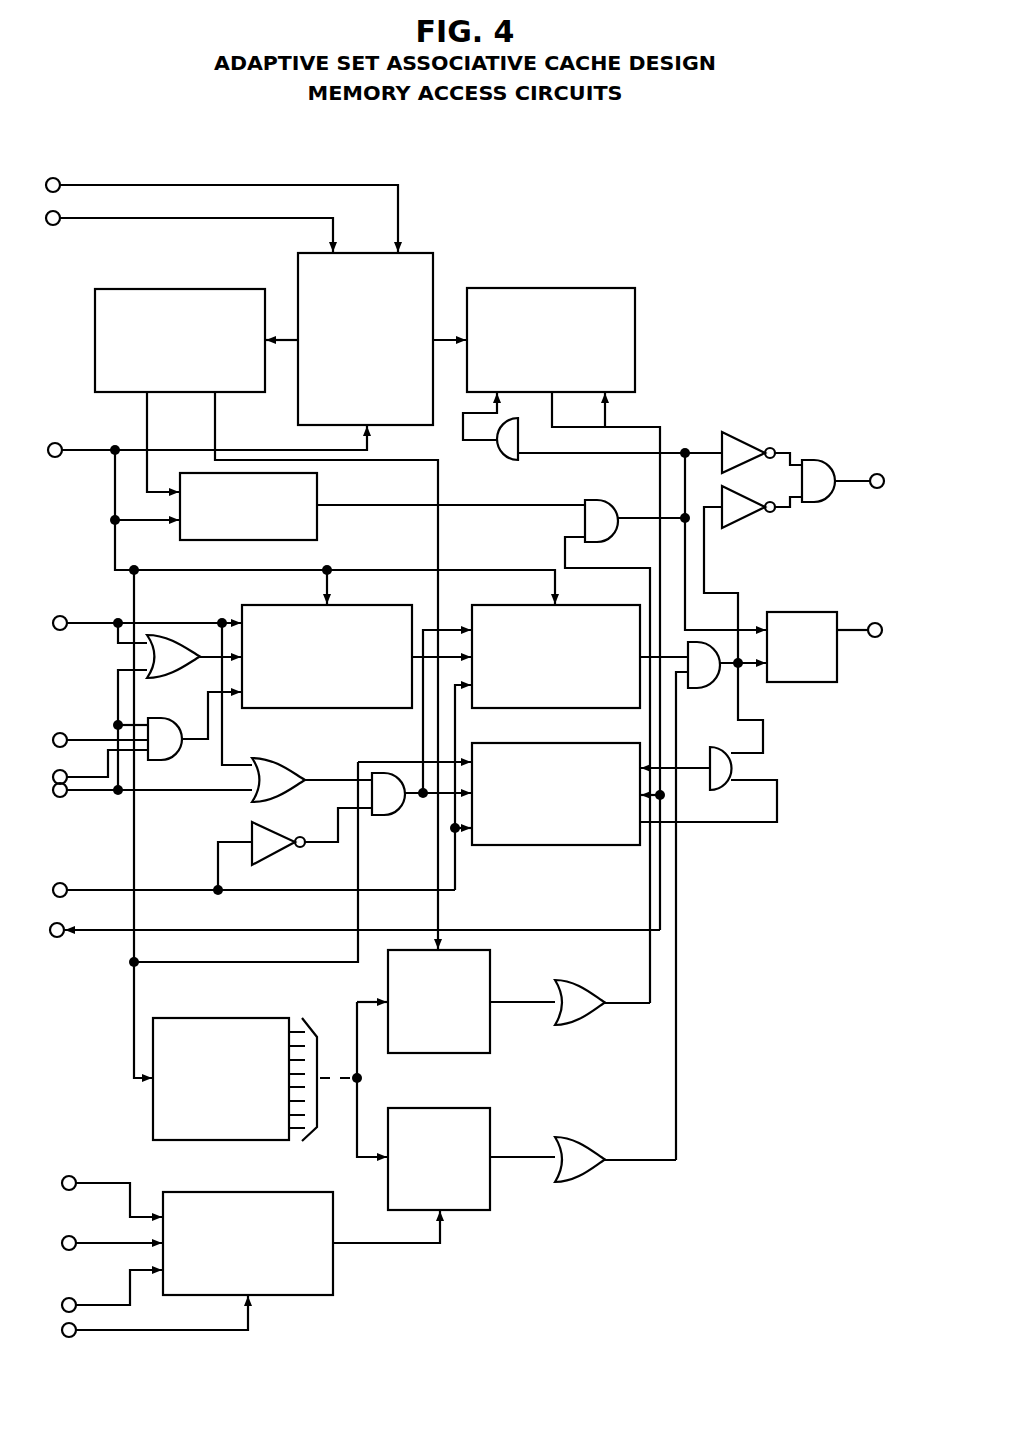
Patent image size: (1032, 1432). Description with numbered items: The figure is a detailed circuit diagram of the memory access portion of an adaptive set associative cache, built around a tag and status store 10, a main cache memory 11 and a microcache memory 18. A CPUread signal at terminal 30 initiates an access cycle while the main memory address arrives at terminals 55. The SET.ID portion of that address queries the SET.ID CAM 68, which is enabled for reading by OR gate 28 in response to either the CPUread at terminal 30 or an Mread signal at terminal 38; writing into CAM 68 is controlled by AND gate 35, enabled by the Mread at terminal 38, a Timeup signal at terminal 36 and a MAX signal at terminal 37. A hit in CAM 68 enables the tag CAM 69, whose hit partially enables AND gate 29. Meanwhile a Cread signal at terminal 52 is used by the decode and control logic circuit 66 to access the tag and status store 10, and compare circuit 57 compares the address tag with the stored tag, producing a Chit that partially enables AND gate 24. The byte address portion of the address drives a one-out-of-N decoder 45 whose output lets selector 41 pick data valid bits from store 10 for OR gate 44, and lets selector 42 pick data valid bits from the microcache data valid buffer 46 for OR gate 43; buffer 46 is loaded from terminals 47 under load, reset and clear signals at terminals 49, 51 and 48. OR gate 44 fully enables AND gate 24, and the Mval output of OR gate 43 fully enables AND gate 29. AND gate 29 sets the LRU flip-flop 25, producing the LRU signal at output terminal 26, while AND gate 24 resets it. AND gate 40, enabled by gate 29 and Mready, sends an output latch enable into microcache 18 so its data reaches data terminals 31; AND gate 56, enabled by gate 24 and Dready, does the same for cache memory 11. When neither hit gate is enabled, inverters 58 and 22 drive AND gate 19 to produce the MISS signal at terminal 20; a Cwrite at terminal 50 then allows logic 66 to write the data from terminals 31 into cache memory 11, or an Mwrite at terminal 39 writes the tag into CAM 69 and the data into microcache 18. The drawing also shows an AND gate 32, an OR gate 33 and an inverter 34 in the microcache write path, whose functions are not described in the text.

The tag and status store 10 is at (183, 288).
The cache memory 11 is at (555, 288).
The microcache memory 18 is at (605, 845).
The AND gate 19 is at (808, 460).
The terminal 20 is at (880, 475).
The inverter 22 is at (724, 528).
The AND gate 24 is at (586, 500).
The LRU flip-flop 25 is at (808, 612).
The output terminal 26 is at (878, 637).
The OR gate 28 is at (170, 678).
The AND gate 29 is at (696, 688).
The terminal 30 is at (63, 617).
The data terminals 31 is at (60, 924).
The AND gate 32 is at (392, 815).
The OR gate 33 is at (278, 802).
The inverter 34 is at (258, 865).
The AND gate 35 is at (170, 760).
The terminal 36 is at (63, 734).
The terminal 37 is at (63, 771).
The terminal 38 is at (63, 797).
The terminal 39 is at (63, 884).
The AND gate 40 is at (728, 790).
The selector 41 is at (440, 1053).
The selector 42 is at (440, 1108).
The OR gate 43 is at (580, 1182).
The OR gate 44 is at (580, 1025).
The 1-out-of-N decoder 45 is at (222, 1140).
The microcache data valid buffer 46 is at (290, 1295).
The terminals 47 is at (72, 1237).
The terminal 48 is at (72, 1337).
The terminal 49 is at (72, 1177).
The terminal 50 is at (57, 179).
The terminal 51 is at (72, 1299).
The terminal 52 is at (57, 225).
The terminals 55 is at (58, 444).
The AND gate 56 is at (520, 460).
The compare circuit 57 is at (290, 540).
The inverter 58 is at (724, 432).
The decode and control logic circuit 66 is at (400, 426).
The SET.ID CAM 68 is at (360, 708).
The tag CAM 69 is at (590, 708).